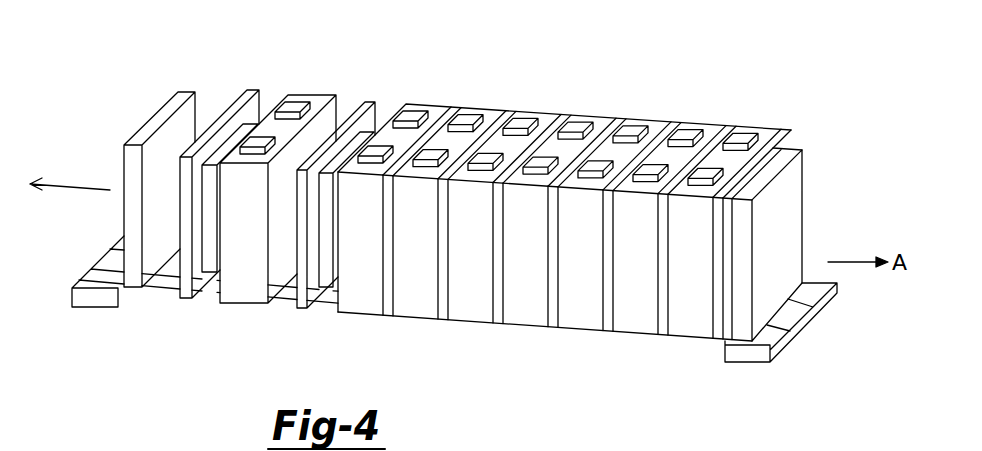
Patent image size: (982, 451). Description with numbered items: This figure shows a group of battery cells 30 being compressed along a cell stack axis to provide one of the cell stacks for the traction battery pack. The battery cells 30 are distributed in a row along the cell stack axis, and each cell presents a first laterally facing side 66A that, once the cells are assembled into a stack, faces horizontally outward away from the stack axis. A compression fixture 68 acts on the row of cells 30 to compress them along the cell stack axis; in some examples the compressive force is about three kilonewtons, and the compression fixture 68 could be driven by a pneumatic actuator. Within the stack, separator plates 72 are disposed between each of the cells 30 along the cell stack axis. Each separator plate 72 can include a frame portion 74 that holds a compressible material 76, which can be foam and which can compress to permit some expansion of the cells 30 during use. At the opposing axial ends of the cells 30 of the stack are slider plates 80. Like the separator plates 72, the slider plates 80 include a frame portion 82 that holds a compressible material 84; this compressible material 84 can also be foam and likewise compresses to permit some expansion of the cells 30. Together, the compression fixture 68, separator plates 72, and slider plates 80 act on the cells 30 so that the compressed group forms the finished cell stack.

The battery cells 30 is at (730, 172).
The first laterally facing side 66A is at (479, 298).
The compression fixture 68 is at (790, 198).
The separator plates 72 is at (351, 117).
The frame portion 74 is at (341, 116).
The compressible material 76 is at (336, 263).
The slider plates 80 is at (768, 153).
The frame portion 82 is at (209, 130).
The compressible material 84 is at (222, 254).